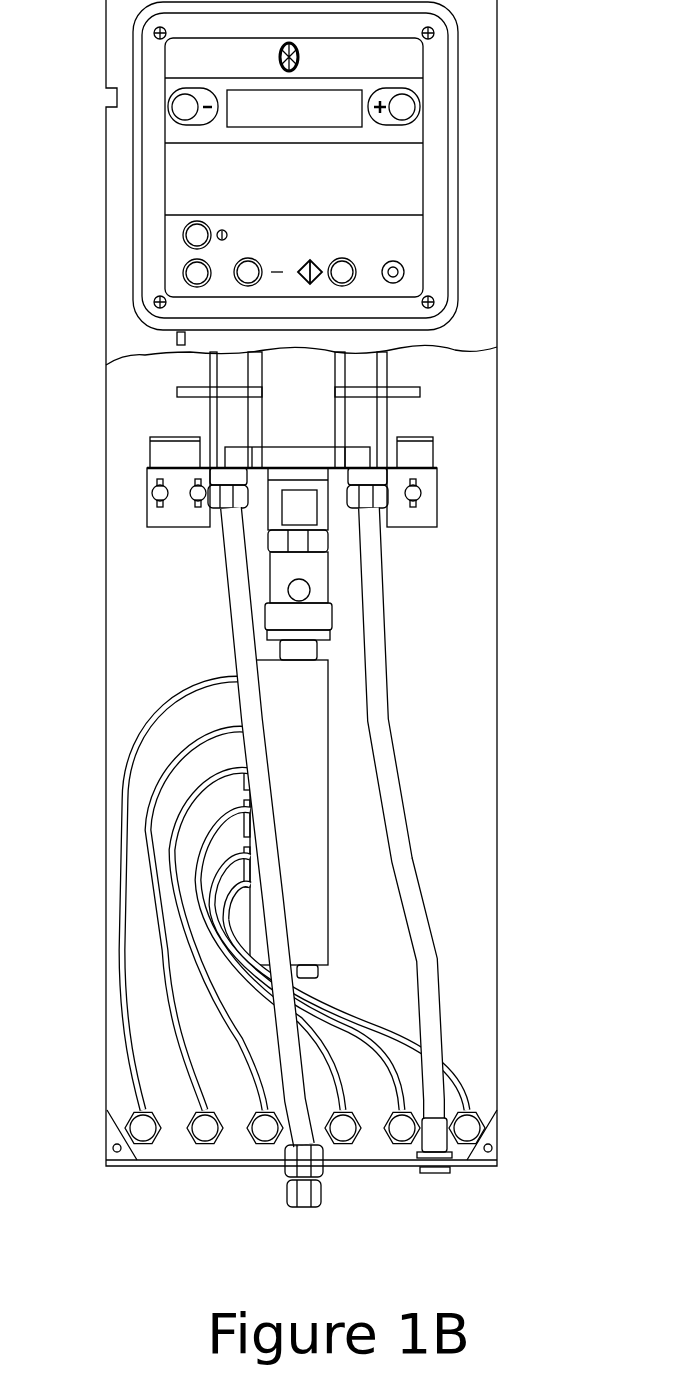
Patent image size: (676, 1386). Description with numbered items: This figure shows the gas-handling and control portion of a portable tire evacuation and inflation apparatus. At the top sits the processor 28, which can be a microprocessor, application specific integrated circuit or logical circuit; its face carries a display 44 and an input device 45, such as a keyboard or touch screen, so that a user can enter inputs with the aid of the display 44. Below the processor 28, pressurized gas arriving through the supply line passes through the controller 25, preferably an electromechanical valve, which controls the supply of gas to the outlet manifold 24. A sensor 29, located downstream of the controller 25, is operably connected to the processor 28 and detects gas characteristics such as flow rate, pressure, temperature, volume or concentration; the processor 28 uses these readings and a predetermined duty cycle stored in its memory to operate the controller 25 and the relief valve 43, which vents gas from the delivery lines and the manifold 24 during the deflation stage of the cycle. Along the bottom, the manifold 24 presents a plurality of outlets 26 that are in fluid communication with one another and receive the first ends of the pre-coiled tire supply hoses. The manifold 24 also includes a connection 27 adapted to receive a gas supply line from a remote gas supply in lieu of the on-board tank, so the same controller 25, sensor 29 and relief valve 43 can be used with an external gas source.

The outlet manifold 24 is at (317, 898).
The controller 25 is at (370, 422).
The outlet 26 is at (473, 1117).
The connection 27 is at (303, 1210).
The processor 28 is at (433, 203).
The sensor 29 is at (293, 512).
The relief valve 43 is at (315, 570).
The display 44 is at (338, 102).
The input device 45 is at (377, 253).